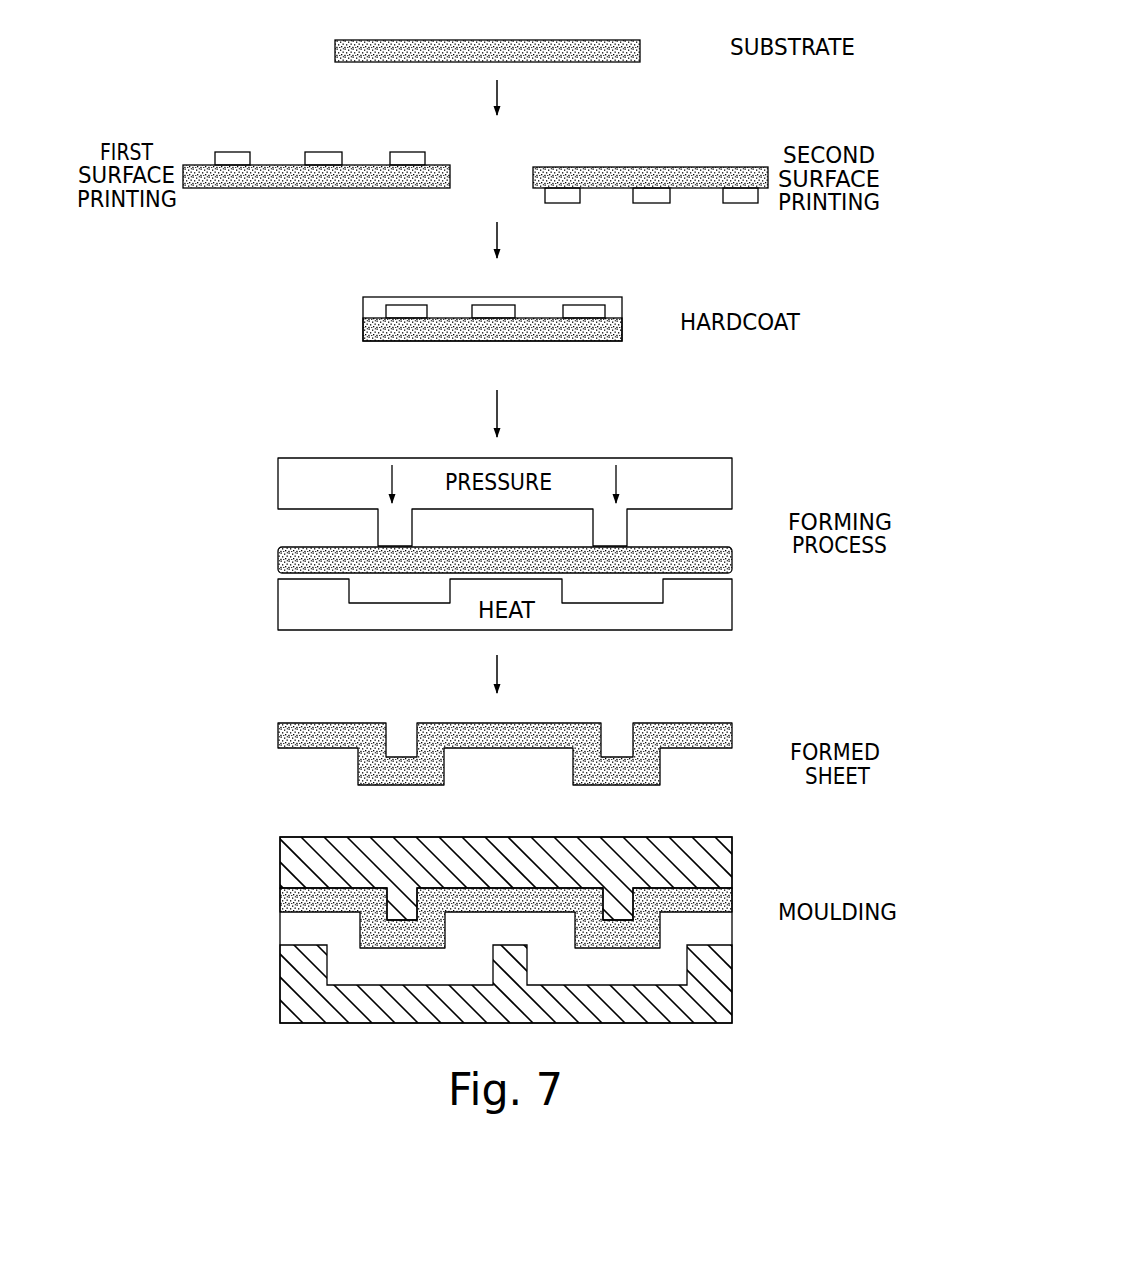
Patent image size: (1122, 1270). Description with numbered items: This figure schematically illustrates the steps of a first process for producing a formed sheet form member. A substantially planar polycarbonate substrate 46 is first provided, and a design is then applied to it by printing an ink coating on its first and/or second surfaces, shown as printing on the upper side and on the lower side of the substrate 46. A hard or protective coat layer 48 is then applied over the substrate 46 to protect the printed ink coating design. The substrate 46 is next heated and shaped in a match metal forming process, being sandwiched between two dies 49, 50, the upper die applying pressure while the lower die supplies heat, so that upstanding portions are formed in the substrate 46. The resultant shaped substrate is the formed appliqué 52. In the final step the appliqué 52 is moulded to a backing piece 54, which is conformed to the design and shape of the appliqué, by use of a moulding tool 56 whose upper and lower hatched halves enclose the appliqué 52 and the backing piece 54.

The substrate 46 is at (606, 50).
The protective coat layer 48 is at (373, 303).
The die 49 is at (717, 480).
The die 50 is at (715, 620).
The formed appliqué 52 is at (720, 731).
The backing piece 54 is at (717, 933).
The moulding tool 56 is at (486, 930).